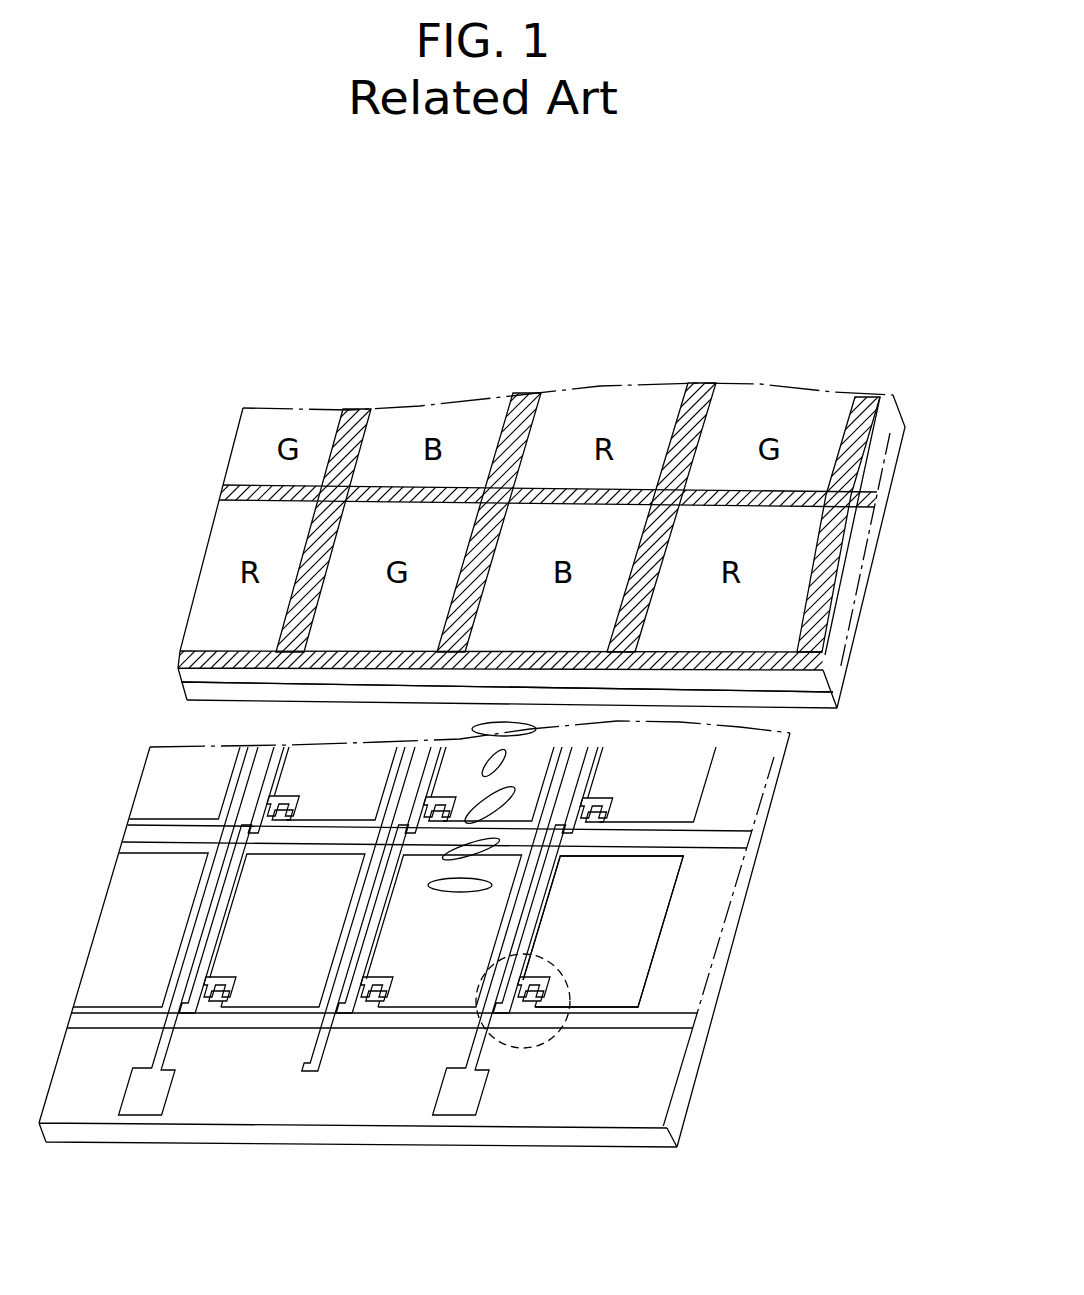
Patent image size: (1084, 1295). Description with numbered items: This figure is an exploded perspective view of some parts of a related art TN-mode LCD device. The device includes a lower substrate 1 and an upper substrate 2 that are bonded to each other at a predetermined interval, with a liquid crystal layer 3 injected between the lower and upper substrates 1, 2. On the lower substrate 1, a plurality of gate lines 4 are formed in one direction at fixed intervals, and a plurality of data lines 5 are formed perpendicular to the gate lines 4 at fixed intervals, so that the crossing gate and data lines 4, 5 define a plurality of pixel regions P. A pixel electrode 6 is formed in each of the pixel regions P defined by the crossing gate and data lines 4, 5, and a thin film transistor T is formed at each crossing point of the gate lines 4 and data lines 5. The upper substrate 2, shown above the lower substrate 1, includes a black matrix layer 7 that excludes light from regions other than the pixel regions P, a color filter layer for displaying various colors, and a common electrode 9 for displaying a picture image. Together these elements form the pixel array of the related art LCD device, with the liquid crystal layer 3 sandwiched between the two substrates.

The lower substrate 1 is at (628, 1135).
The upper substrate 2 is at (812, 680).
The liquid crystal layer 3 is at (512, 798).
The gate lines 4 is at (646, 1029).
The data lines 5 is at (470, 1058).
The pixel electrodes 6 is at (658, 944).
The black matrix layer 7 is at (862, 496).
The common electrode 9 is at (813, 700).
The pixel regions P is at (700, 892).
The thin film transistors T is at (521, 1047).